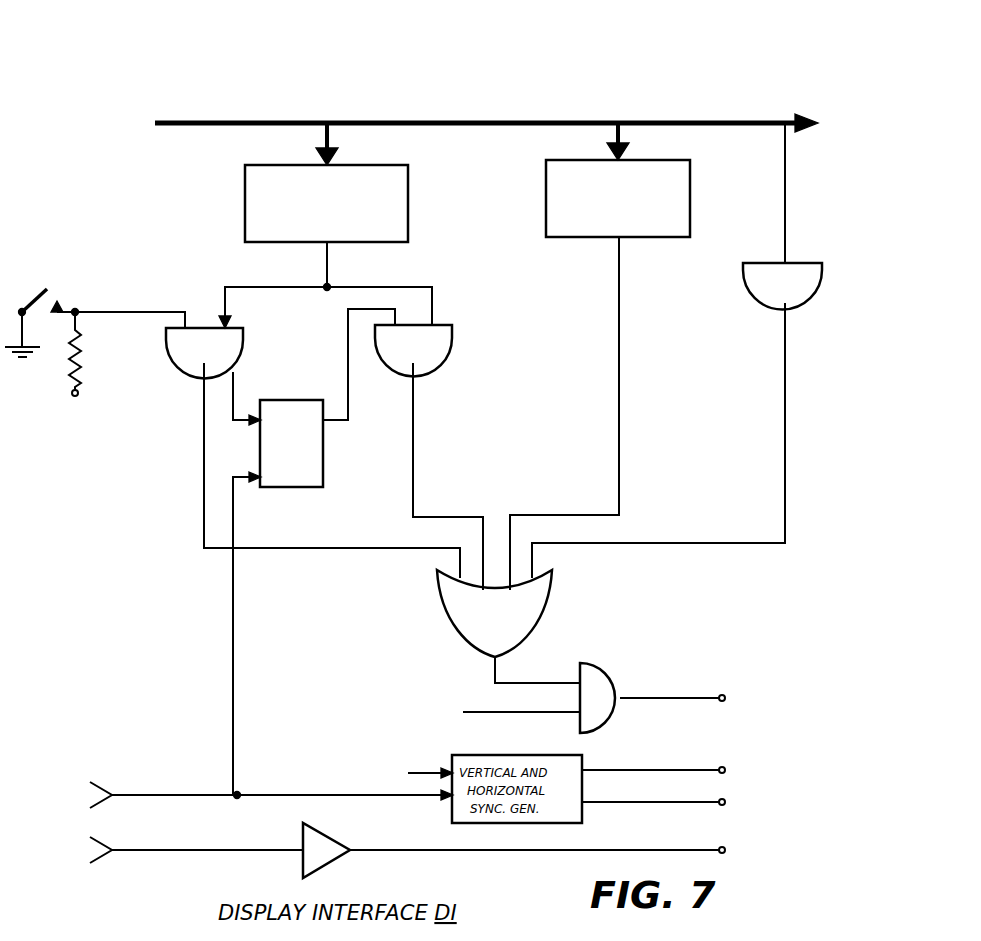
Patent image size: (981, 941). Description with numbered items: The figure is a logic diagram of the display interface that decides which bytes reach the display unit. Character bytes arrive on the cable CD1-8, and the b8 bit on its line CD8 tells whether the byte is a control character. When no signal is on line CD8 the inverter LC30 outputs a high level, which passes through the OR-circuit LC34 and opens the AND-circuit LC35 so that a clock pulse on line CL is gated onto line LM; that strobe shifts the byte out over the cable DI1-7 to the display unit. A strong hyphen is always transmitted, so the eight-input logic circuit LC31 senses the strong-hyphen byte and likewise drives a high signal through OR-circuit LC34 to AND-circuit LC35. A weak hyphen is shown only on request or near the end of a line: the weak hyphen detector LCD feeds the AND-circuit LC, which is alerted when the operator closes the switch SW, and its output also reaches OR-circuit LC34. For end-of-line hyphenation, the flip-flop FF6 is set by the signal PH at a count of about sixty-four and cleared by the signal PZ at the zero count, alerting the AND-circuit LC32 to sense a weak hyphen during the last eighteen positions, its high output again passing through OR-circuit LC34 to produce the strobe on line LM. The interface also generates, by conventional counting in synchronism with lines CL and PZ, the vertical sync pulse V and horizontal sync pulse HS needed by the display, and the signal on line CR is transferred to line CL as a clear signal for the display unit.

The cable CD1-8 is at (245, 122).
The cable DI1-7 is at (797, 117).
The weak hyphen detector LCD is at (410, 170).
The logic circuit LC31 is at (655, 240).
The line CD8 is at (788, 198).
The inverter LC30 is at (818, 290).
The switch SW is at (55, 295).
The AND-circuit LC is at (186, 360).
The signal PH is at (236, 386).
The flip-flop FF6 is at (323, 466).
The AND-circuit LC32 is at (446, 352).
The signal PZ is at (236, 518).
The OR-circuit LC34 is at (548, 618).
The AND-circuit LC35 is at (612, 673).
The line LM is at (672, 698).
The line CL is at (514, 720).
The vertical sync pulse V is at (645, 770).
The horizontal sync pulse HS is at (632, 802).
The line CR is at (148, 848).